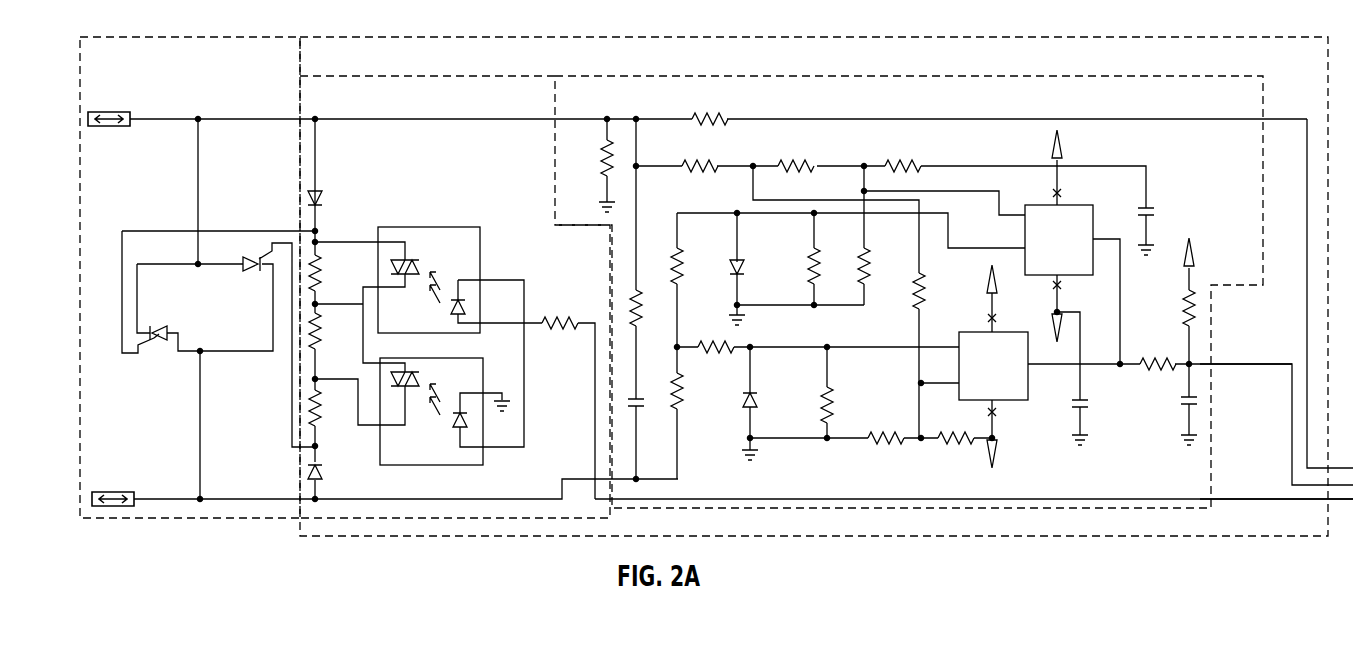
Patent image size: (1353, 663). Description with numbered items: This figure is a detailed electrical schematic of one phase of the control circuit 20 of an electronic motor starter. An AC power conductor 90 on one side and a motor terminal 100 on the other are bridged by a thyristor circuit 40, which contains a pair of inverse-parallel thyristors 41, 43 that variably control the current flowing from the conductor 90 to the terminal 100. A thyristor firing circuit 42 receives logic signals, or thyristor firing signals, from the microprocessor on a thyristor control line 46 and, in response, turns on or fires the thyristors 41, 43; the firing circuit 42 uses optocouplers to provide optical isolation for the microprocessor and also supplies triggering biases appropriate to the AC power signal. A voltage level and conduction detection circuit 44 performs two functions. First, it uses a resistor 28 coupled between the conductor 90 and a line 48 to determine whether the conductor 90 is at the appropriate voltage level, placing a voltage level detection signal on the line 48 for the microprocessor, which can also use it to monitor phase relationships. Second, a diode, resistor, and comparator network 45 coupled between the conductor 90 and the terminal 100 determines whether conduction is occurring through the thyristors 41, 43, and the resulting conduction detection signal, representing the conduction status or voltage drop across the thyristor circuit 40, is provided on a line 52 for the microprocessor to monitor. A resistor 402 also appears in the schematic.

The control circuit 20 is at (635, 37).
The thyristor circuit 40 is at (180, 37).
The thyristor 41 is at (158, 345).
The thyristor 43 is at (256, 275).
The thyristor firing circuit 42 is at (485, 76).
The voltage level and conduction detection circuit 44 is at (918, 76).
The comparator network 45 is at (1172, 160).
The thyristor control line 46 is at (1256, 499).
The voltage level detection line 48 is at (1276, 119).
The conduction detection line 52 is at (1236, 364).
The AC power conductor 90 is at (228, 119).
The motor terminal 100 is at (147, 499).
The resistor 28 is at (611, 136).
The resistor 402 is at (567, 408).